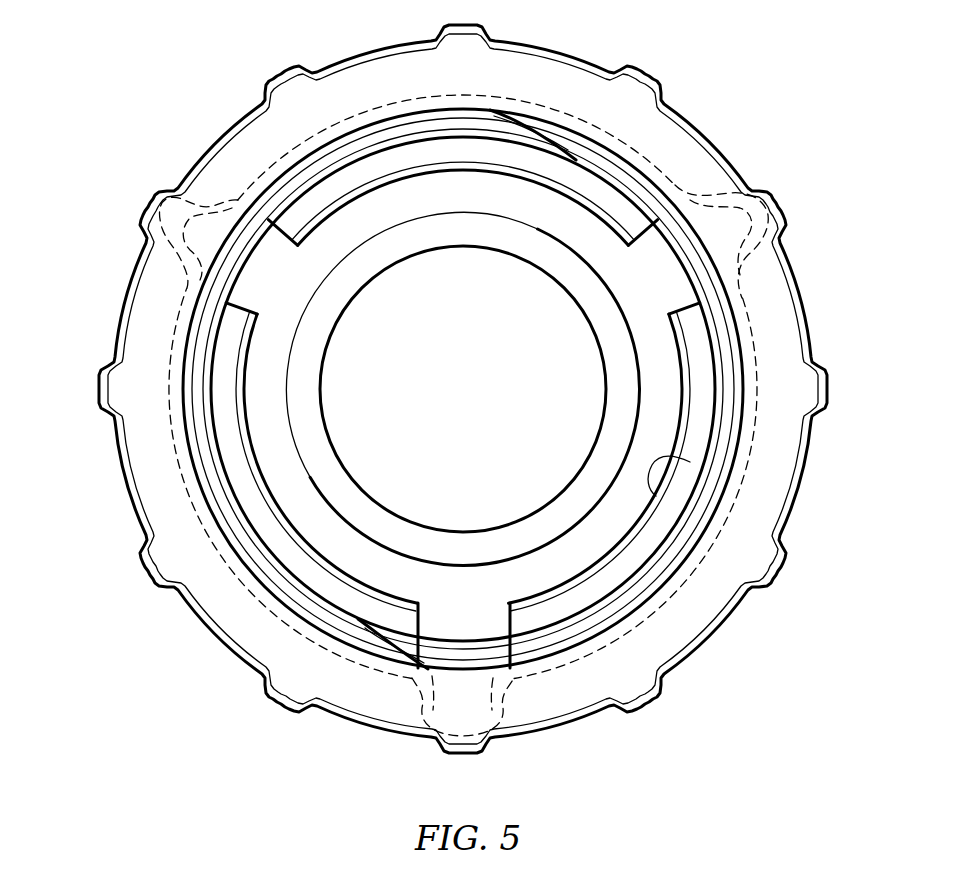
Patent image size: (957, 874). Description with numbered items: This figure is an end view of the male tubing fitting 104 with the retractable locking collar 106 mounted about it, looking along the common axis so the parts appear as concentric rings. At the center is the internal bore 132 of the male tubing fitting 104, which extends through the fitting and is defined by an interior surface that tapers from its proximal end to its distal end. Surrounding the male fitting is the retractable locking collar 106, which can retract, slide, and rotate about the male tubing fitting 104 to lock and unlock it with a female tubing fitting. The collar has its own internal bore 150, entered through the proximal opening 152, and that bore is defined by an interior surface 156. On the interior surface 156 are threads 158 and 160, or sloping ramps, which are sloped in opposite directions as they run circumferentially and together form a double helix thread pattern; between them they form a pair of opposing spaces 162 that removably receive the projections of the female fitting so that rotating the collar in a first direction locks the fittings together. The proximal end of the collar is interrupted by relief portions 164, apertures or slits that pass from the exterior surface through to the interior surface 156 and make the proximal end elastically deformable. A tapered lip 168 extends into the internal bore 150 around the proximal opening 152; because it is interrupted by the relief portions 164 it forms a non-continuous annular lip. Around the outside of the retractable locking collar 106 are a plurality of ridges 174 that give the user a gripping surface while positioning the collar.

The male tubing fitting 104 is at (278, 383).
The retractable locking collar 106 is at (714, 138).
The internal bore 132 is at (443, 403).
The internal bore 150 is at (660, 404).
The proximal opening 152 is at (690, 462).
The interior surface 156 is at (428, 695).
The thread 158 is at (698, 262).
The thread 160 is at (206, 478).
The spaces 162 is at (402, 126).
The relief portions 164 is at (253, 292).
The tapered lip 168 is at (430, 150).
The ridges 174 is at (292, 72).